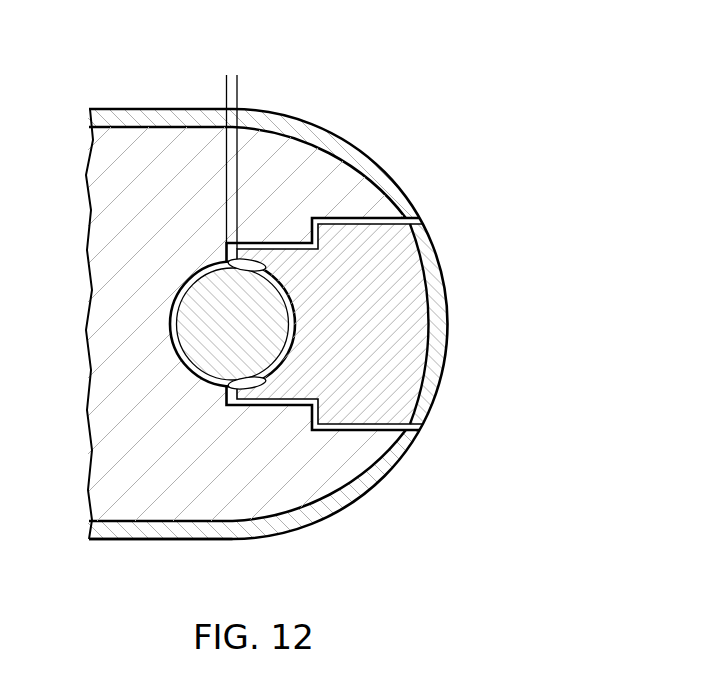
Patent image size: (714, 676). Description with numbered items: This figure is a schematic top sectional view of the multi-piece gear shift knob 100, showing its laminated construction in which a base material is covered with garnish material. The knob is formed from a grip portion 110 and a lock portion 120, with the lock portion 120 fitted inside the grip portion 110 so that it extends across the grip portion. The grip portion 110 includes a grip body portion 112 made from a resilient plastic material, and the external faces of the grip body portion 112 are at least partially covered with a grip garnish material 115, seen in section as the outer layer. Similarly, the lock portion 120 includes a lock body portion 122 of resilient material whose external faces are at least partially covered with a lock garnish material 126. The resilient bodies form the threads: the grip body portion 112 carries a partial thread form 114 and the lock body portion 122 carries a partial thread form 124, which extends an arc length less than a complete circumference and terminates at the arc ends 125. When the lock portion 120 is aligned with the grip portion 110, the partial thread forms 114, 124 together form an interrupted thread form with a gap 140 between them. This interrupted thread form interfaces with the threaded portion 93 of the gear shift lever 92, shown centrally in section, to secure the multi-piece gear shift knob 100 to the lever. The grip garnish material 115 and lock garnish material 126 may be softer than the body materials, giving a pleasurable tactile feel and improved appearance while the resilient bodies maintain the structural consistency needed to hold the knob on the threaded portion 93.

The multi-piece gear shift knob 100 is at (457, 90).
The grip portion 110 is at (327, 105).
The grip body portion 112 is at (108, 500).
The partial thread form 114 is at (170, 318).
The grip garnish material 115 is at (122, 542).
The lock portion 120 is at (446, 280).
The lock body portion 122 is at (408, 368).
The partial thread form 124 is at (289, 324).
The arc end 125 is at (267, 265).
The lock garnish material 126 is at (449, 330).
The gap 140 is at (267, 80).
The gear shift lever 92 is at (187, 295).
The threaded portion 93 is at (184, 354).